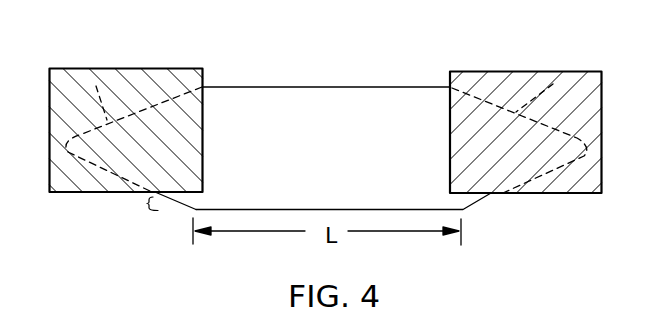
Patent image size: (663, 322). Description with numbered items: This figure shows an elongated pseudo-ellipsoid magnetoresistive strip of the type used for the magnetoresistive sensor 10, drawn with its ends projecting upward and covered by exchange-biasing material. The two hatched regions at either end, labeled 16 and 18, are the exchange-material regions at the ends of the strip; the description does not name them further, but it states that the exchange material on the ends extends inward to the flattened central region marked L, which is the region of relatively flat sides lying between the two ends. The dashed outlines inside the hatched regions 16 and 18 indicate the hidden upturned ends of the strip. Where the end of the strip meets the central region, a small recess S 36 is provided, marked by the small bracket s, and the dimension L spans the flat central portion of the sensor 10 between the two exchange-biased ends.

The magnetoresistive sensor 10 is at (433, 198).
The first terminal block 16 is at (100, 82).
The second terminal block 18 is at (555, 82).
The recess 36 is at (200, 203).